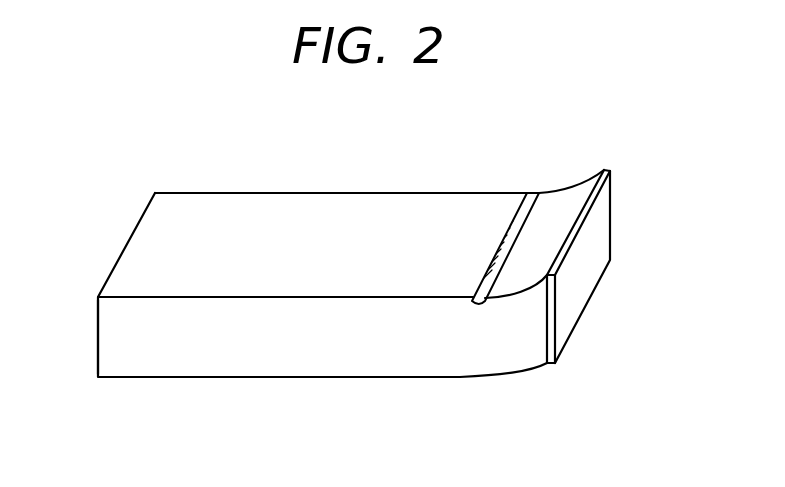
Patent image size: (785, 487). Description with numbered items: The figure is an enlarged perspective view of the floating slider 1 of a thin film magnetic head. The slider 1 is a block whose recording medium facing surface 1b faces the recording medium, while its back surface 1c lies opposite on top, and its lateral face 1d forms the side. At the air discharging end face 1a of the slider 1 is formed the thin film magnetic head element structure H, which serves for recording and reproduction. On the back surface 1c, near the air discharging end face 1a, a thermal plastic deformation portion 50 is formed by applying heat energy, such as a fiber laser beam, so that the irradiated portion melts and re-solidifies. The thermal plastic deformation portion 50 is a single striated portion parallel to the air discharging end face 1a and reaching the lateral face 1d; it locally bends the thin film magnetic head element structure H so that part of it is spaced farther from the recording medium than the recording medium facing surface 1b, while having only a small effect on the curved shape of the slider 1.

The floating slider 1 is at (170, 243).
The air discharging end face 1a is at (548, 333).
The recording medium facing surface 1b is at (275, 377).
The back surface 1c is at (288, 225).
The lateral face 1d is at (113, 341).
The thermal plastic deformation portion 50 is at (512, 218).
The thin film magnetic head element structure H is at (593, 239).